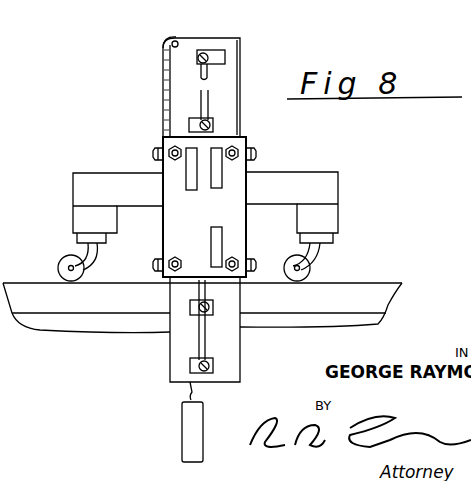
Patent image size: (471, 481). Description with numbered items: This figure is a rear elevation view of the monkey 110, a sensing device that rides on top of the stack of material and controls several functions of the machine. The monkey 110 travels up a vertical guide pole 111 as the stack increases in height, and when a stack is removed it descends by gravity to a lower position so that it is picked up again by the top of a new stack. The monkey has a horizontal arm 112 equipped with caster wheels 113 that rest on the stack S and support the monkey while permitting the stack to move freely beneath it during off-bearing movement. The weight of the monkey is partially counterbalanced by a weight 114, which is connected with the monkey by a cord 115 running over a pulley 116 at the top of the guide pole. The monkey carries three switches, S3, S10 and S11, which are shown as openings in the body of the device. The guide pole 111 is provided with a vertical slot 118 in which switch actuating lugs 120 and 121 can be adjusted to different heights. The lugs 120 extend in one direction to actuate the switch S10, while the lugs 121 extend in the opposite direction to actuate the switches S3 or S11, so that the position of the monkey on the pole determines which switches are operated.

The monkey 110 is at (358, 175).
The vertical guide pole 111 is at (232, 80).
The horizontal arm 112 is at (105, 173).
The caster wheels 113 is at (58, 264).
The weight 114 is at (186, 433).
The cord 115 is at (163, 88).
The pulley 116 is at (177, 37).
The vertical slot 118 is at (207, 342).
The switch actuating lugs 120 is at (190, 368).
The switch actuating lugs 121 is at (222, 55).
The switch S10 is at (187, 170).
The switch S11 is at (216, 188).
The switch S3 is at (211, 244).
The shelf S is at (65, 325).